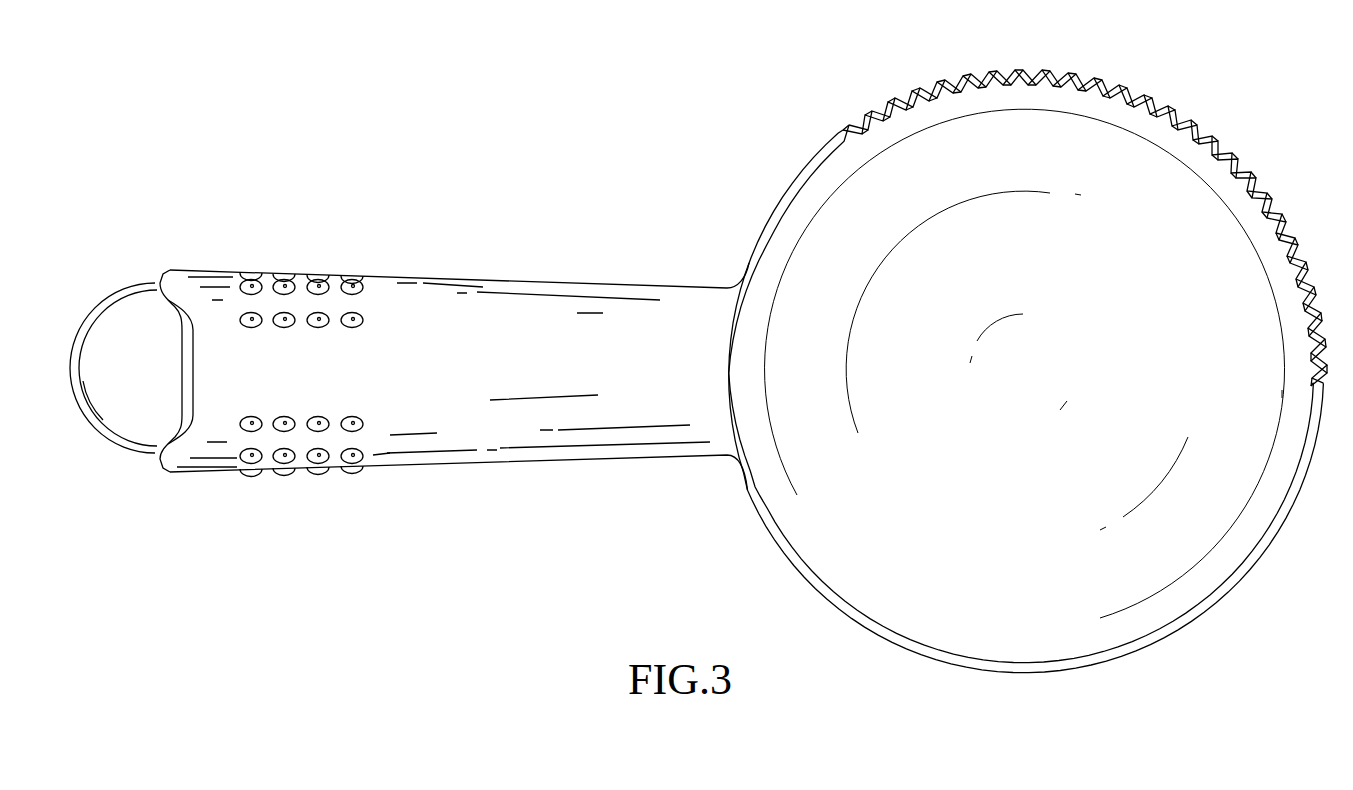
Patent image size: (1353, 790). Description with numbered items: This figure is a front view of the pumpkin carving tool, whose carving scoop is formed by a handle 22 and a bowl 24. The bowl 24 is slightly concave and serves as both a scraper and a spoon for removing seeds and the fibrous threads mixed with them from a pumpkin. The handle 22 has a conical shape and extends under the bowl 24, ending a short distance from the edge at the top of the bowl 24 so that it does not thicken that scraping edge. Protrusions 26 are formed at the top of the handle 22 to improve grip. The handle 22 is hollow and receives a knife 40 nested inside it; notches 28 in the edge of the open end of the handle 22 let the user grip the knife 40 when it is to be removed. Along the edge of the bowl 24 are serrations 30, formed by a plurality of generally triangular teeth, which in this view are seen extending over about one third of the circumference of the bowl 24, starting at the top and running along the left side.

The handle 22 is at (438, 278).
The bowl 24 is at (1206, 577).
The protrusions 26 is at (318, 272).
The notches 28 is at (168, 405).
The serrations 30 is at (1130, 88).
The knife 40 is at (127, 283).